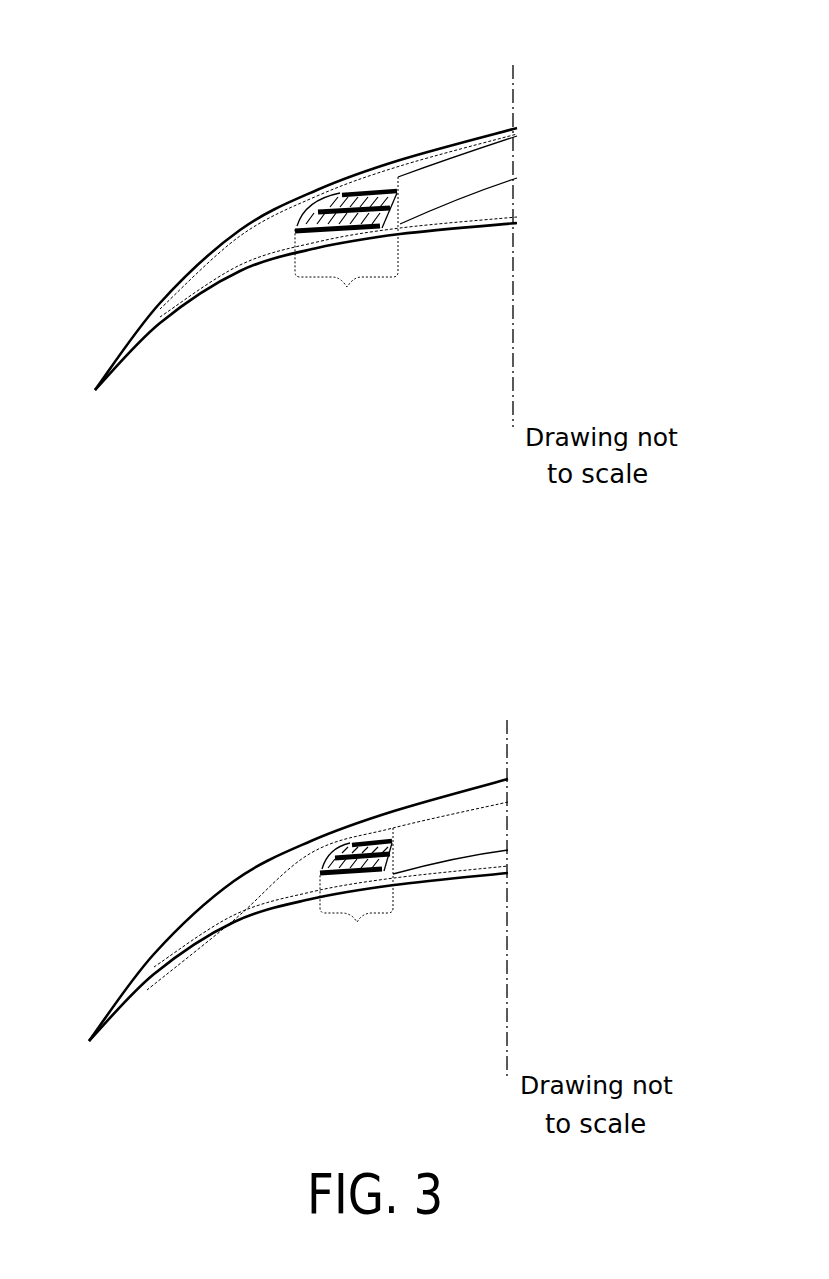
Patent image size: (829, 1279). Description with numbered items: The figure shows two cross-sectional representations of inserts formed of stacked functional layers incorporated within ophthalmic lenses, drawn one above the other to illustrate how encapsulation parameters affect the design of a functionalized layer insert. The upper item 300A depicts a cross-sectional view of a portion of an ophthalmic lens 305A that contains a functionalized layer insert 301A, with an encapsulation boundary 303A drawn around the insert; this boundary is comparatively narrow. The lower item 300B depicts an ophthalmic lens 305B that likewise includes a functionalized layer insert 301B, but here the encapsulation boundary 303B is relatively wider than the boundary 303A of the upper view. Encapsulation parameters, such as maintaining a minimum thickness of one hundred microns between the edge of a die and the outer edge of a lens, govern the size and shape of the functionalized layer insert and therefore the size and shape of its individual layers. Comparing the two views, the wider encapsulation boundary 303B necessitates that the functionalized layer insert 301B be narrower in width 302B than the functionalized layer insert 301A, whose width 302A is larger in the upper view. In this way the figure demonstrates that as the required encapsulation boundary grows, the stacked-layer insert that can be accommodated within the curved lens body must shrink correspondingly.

The cross-sectional view item 300A is at (287, 238).
The functionalized layer insert 301A is at (368, 185).
The width 302A is at (348, 289).
The encapsulation boundary 303A is at (200, 300).
The ophthalmic lens 305A is at (483, 132).
The cross-sectional view item 300B is at (293, 875).
The functionalized layer insert 301B is at (373, 832).
The width 302B is at (357, 924).
The encapsulation boundary 303B is at (222, 932).
The ophthalmic lens 305B is at (457, 788).